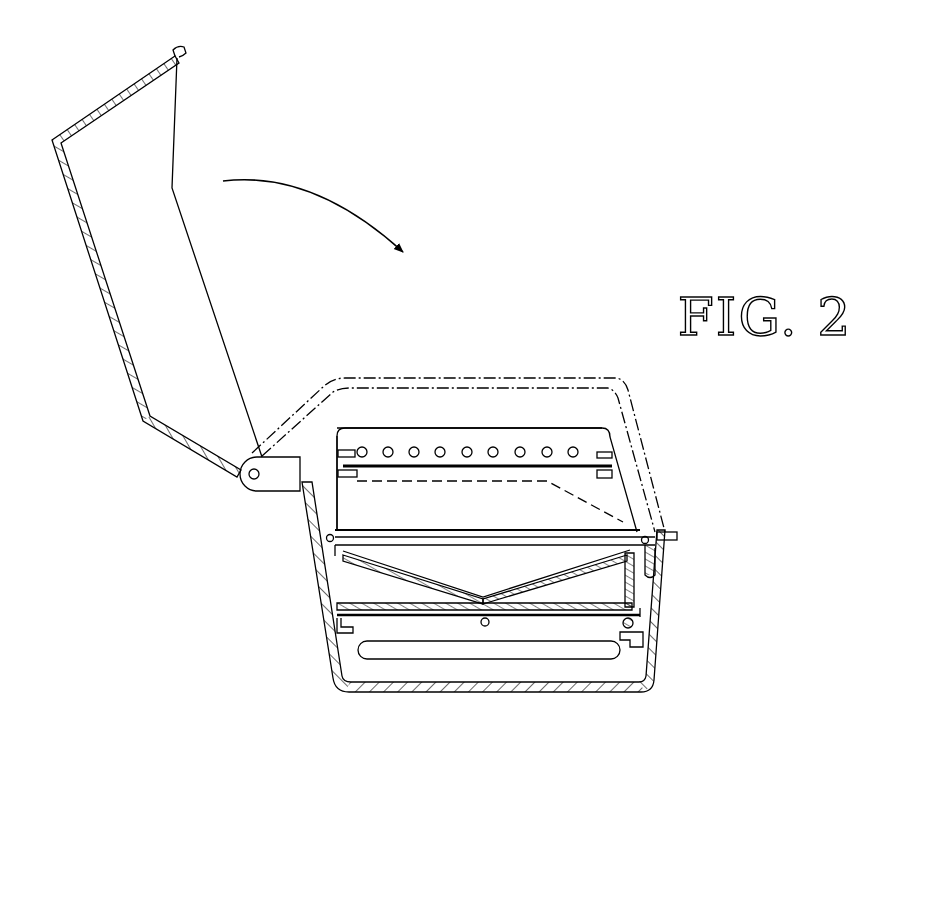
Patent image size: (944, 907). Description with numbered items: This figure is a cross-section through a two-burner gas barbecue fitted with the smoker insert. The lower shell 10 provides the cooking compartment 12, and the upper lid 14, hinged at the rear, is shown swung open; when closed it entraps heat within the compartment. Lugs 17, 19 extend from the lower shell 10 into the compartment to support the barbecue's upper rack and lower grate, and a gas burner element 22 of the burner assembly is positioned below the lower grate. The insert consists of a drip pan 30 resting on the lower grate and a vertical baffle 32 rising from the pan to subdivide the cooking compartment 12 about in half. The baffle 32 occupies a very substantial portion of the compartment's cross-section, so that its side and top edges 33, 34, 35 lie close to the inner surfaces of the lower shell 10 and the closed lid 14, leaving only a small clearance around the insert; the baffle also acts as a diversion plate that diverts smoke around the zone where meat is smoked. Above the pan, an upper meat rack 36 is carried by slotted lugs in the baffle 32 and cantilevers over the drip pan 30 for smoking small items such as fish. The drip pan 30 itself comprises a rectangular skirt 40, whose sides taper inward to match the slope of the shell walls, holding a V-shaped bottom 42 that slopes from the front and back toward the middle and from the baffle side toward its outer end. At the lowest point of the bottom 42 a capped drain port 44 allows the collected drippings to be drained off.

The lower shell 10 is at (655, 618).
The cooking compartment 12 is at (600, 412).
The upper lid 14 is at (127, 90).
The lugs 17 is at (317, 582).
The lugs 19 is at (340, 663).
The gas burner element 22 is at (523, 652).
The drip pan 30 is at (645, 580).
The vertical baffle 32 is at (507, 429).
The side edge of baffle 33 is at (623, 497).
The top edge of baffle 34 is at (552, 428).
The side edge of baffle 35 is at (335, 447).
The upper meat rack 36 is at (577, 448).
The rectangular skirt 40 is at (340, 617).
The V-shaped bottom 42 is at (399, 582).
The capped drain port 44 is at (480, 628).